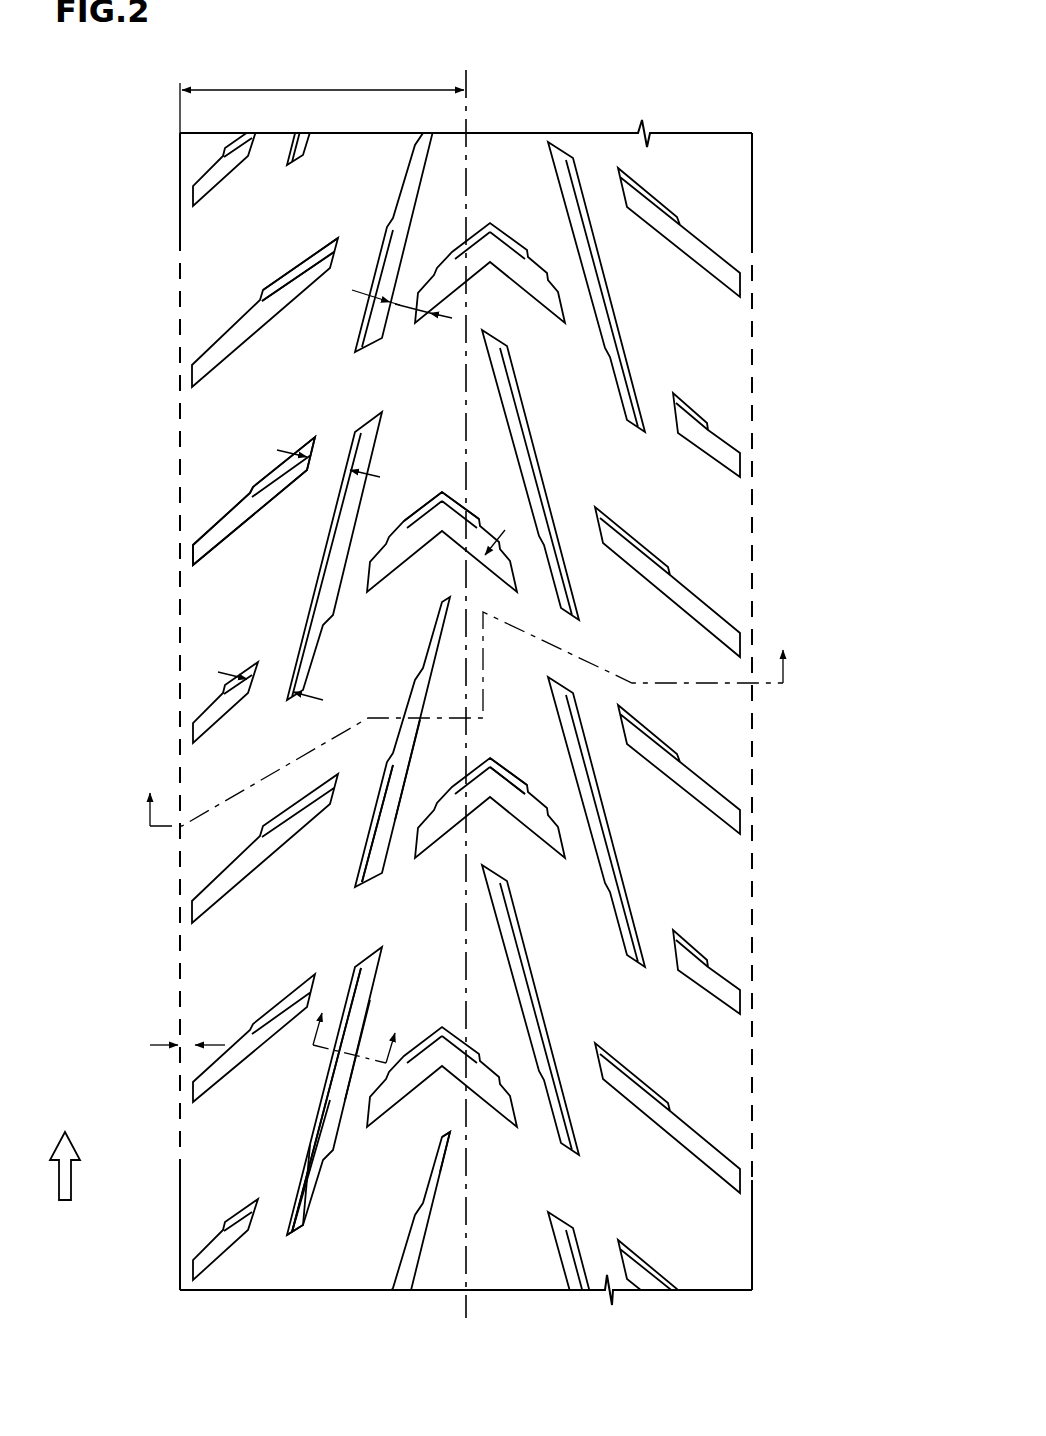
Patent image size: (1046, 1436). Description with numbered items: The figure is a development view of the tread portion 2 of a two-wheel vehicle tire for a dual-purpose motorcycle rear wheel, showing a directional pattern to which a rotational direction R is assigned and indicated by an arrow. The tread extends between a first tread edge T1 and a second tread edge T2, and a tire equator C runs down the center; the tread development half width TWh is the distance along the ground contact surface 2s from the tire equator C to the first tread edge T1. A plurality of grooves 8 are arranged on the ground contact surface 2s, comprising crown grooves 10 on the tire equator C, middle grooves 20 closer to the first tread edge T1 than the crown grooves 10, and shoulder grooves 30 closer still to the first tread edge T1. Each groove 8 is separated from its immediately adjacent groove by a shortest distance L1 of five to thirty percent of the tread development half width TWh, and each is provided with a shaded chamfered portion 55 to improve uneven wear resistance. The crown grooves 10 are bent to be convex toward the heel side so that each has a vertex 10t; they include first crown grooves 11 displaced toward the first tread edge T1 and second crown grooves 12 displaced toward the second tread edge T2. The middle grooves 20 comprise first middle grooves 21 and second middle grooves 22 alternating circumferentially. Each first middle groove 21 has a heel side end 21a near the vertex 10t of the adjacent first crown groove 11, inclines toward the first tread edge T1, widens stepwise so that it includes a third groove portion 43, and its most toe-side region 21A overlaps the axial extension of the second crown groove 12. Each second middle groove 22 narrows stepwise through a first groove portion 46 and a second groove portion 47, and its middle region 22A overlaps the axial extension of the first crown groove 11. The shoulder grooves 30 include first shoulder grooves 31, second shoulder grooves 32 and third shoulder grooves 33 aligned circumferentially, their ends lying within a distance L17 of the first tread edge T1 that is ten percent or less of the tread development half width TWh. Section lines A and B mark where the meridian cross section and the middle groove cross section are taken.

The tread portion 2 is at (682, 118).
The ground contact surface 2s is at (700, 330).
The grooves 8 is at (112, 500).
The crown grooves 10 is at (498, 675).
The vertex 10t is at (445, 488).
The first crown grooves 11 is at (480, 1080).
The second crown grooves 12 is at (547, 833).
The middle grooves 20 is at (405, 205).
The first middle groove 21 is at (398, 770).
The region 21A is at (378, 850).
The heel side end 21a is at (455, 1135).
The second middle groove 22 is at (318, 1120).
The region 22A is at (337, 1103).
The shoulder grooves 30 is at (258, 323).
The first shoulder grooves 31 is at (238, 875).
The second shoulder grooves 32 is at (220, 1078).
The third shoulder grooves 33 is at (218, 1248).
The third groove portion 43 is at (387, 810).
The first groove portion 46 is at (313, 1122).
The second groove portion 47 is at (310, 1193).
The chamfered portion 55 is at (290, 278).
The first tread edge T1 is at (180, 160).
The second tread edge T2 is at (752, 160).
The tire equator C is at (467, 108).
The tread development half width TWh is at (322, 96).
The shortest distance L1 is at (402, 310).
The distance L17 is at (180, 1045).
The rotational direction R is at (65, 1150).
The A-A line A is at (465, 719).
The B-B line B is at (360, 1023).